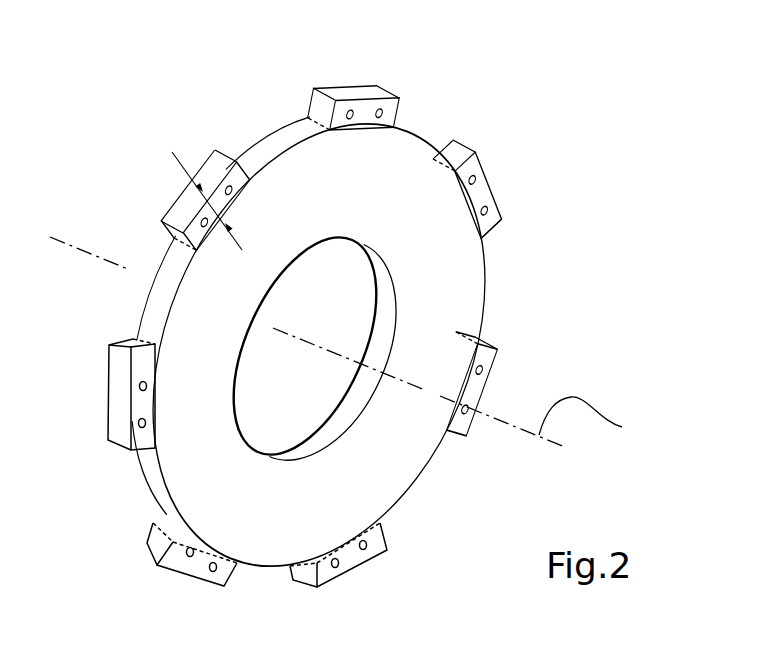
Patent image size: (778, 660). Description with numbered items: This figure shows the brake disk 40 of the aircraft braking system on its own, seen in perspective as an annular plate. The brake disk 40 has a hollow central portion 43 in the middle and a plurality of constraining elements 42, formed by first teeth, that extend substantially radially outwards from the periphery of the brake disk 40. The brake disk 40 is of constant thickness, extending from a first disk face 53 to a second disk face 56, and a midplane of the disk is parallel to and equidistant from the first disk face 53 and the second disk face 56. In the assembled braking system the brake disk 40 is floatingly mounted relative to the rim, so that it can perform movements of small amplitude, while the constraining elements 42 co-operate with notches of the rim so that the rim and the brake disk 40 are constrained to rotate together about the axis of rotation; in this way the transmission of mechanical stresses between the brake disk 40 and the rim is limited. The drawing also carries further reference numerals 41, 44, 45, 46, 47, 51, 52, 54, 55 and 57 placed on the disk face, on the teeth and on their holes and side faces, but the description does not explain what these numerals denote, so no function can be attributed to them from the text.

The brake disk 40 is at (608, 170).
The first face of flange 41 is at (300, 521).
The constraining elements 42 is at (486, 184).
The hollow central portion 43 is at (330, 322).
The tab 44 is at (531, 152).
The tab hole 45 is at (500, 226).
The tab side face 46 is at (458, 148).
The tab radial edge 47 is at (492, 234).
The tab 51 is at (491, 375).
The inner edge of central opening 52 is at (251, 424).
The first disk face 53 is at (391, 452).
The tab side face 54 is at (177, 212).
The tab 55 is at (192, 160).
The second disk face 56 is at (129, 476).
The tab direction indicator 57 is at (229, 225).